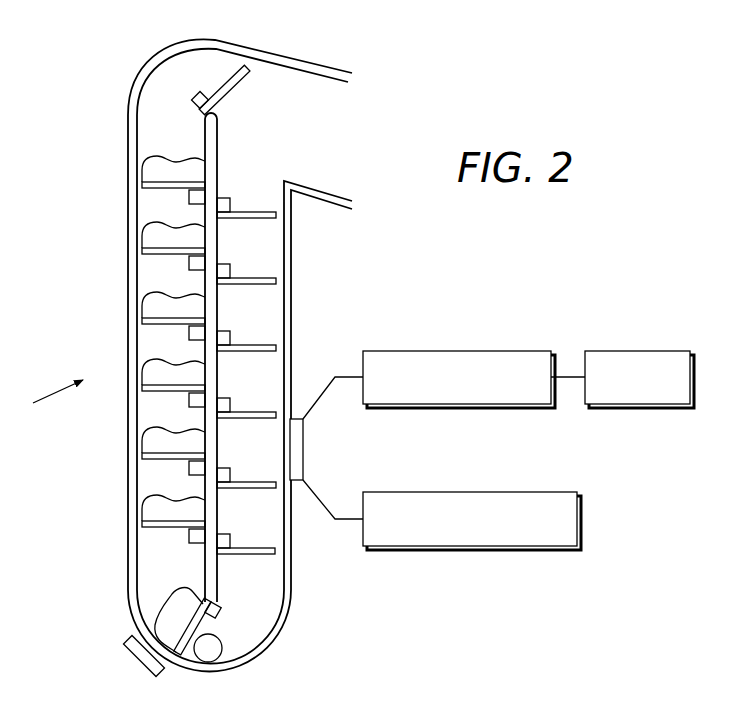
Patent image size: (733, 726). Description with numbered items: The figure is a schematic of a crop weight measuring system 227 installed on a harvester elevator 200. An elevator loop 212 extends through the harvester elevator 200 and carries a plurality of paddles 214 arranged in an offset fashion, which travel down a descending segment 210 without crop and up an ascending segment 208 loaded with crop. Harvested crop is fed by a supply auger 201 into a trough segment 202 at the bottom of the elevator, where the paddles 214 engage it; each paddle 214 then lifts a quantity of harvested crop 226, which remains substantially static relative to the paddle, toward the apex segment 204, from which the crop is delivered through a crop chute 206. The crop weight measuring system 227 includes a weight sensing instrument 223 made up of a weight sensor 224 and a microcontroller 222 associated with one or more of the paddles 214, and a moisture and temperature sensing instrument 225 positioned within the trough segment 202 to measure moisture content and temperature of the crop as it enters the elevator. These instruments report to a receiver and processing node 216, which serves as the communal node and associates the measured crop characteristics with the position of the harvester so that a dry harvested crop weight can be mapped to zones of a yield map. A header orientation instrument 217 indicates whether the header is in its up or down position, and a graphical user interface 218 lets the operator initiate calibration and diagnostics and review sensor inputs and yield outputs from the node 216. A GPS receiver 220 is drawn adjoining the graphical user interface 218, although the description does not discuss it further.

The harvester elevator 200 is at (320, 63).
The supply auger 201 is at (205, 675).
The trough segment 202 is at (253, 620).
The apex segment 204 is at (177, 68).
The crop chute 206 is at (343, 130).
The ascending segment 208 is at (155, 282).
The descending segment 210 is at (262, 380).
The elevator loop 212 is at (218, 238).
The paddles 214 is at (258, 555).
The receiver and processing node 216 is at (304, 450).
The header orientation instrument 217 is at (547, 492).
The graphical user interface 218 is at (512, 351).
The GPS receiver 220 is at (663, 351).
The microcontroller 222 is at (152, 391).
The weight sensing instrument 223 is at (42, 405).
The weight sensor 224 is at (197, 400).
The moisture and temperature sensing instrument 225 is at (142, 655).
The quantity of harvested crop 226 is at (153, 240).
The crop weight measuring system 227 is at (110, 60).